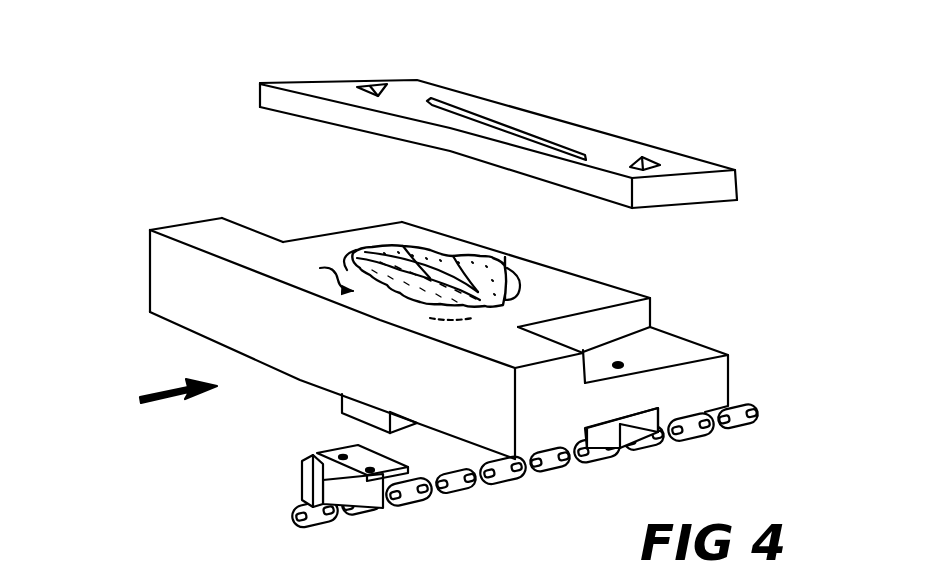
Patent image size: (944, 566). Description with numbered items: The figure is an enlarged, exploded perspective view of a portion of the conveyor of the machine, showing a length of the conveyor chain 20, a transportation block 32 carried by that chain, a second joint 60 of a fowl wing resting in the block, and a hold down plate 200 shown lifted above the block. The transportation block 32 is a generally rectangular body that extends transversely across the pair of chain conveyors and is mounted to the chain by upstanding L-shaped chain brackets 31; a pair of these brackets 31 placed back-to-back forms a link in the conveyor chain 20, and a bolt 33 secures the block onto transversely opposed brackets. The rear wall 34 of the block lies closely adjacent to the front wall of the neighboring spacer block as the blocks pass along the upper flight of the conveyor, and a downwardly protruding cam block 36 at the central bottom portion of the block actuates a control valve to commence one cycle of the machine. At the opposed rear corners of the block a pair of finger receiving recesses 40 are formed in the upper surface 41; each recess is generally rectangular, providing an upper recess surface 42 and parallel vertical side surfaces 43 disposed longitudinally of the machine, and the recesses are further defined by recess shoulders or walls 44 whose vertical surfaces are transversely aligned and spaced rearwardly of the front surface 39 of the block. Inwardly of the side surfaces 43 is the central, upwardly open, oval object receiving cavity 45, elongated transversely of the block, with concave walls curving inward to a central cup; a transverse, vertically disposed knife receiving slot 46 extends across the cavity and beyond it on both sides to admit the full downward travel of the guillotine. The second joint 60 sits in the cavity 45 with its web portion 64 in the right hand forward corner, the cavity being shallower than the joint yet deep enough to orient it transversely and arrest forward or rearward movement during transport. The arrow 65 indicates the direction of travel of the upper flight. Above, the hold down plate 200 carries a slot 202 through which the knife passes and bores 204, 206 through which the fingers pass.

The conveyor chain 20 is at (413, 508).
The chain bracket 31 is at (305, 455).
The bolt 33 is at (623, 455).
The rear wall 34 is at (170, 308).
The cam block 36 is at (340, 402).
The front surface 39 is at (577, 273).
The finger receiving recess 40 is at (305, 234).
The upper surface 41 is at (597, 295).
The upper recess surface 42 is at (713, 346).
The vertical side surface 43 is at (365, 226).
The recess shoulder 44 is at (257, 230).
The object receiving cavity 45 is at (320, 272).
The knife receiving slot 46 is at (497, 312).
The transportation block 32 is at (516, 242).
The second joint 60 is at (445, 252).
The web portion 64 is at (507, 256).
The arrow 65 is at (173, 402).
The hold down plate 200 is at (684, 137).
The slot 202 is at (507, 120).
The bore 204 is at (378, 83).
The bore 206 is at (640, 163).